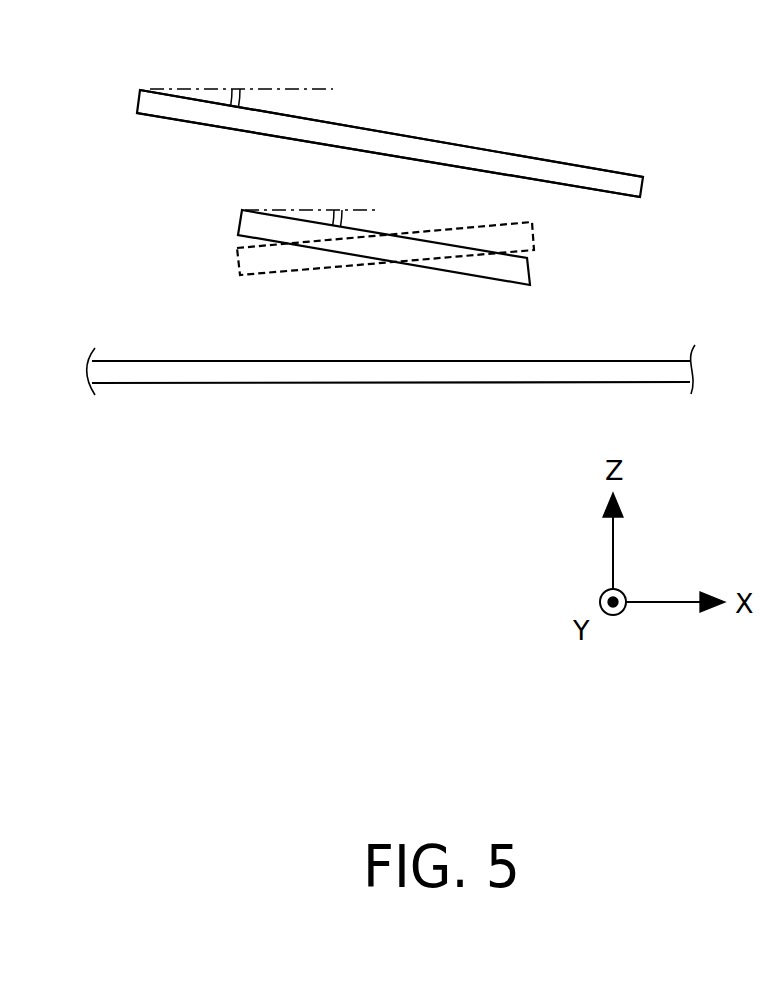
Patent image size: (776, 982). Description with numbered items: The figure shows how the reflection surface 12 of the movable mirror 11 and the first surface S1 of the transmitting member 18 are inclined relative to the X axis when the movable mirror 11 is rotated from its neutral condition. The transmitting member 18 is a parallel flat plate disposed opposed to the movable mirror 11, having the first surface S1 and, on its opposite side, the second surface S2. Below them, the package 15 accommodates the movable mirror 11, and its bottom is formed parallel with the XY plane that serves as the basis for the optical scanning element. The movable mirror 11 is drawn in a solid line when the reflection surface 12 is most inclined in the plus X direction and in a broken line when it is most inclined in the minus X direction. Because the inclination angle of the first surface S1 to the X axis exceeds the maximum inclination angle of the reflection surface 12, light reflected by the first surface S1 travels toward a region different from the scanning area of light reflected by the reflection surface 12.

The transmitting member 18 is at (643, 141).
The first surface S1 is at (510, 156).
The second surface S2 is at (595, 192).
The movable mirror 11 is at (240, 223).
The reflection surface 12 is at (532, 252).
The package 15 is at (536, 377).